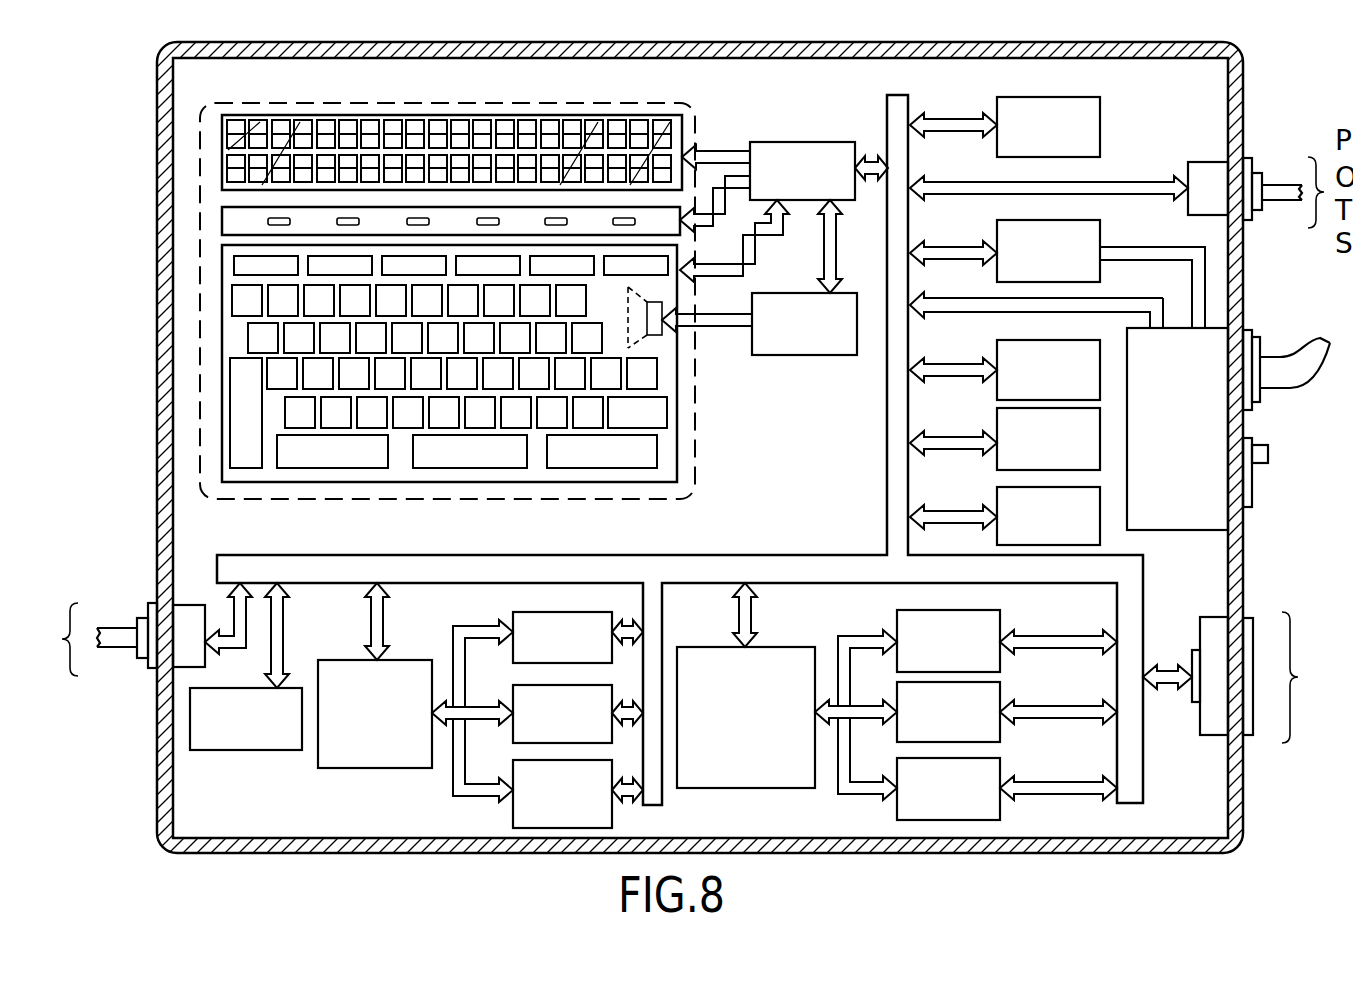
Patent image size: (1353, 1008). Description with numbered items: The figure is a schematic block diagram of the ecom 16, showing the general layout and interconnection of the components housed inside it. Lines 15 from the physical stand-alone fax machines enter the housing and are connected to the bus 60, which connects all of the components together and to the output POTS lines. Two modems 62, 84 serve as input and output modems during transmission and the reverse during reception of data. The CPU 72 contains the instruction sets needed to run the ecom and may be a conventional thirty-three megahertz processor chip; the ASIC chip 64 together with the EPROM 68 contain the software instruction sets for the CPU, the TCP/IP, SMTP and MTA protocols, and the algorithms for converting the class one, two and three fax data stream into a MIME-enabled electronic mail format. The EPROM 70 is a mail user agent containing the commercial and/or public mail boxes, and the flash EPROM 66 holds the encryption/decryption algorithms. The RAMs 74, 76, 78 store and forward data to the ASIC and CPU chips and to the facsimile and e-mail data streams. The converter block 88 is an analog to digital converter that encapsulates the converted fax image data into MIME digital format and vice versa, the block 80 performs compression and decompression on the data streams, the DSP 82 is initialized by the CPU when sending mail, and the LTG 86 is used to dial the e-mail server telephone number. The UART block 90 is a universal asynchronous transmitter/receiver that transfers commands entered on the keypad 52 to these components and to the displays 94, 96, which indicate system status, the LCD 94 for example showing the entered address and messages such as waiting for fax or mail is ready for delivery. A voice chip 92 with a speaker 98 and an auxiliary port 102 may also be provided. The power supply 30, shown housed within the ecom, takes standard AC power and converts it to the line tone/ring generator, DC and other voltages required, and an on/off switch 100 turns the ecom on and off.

The lines 15 is at (120, 637).
The ecom 16 is at (1243, 547).
The power supply 30 is at (1190, 381).
The keypad 52 is at (222, 294).
The bus 60 is at (780, 560).
The modem 62 is at (271, 738).
The ASIC chip 64 is at (385, 758).
The flash EPROM 66 is at (575, 653).
The EPROM 68 is at (575, 729).
The EPROM 70 is at (575, 805).
The CPU 72 is at (766, 778).
The RAM 74 is at (956, 655).
The RAM 76 is at (956, 727).
The RAM 78 is at (956, 800).
The compression/decompression block 80 is at (1062, 532).
The DSP 82 is at (1062, 458).
The modem 84 is at (1062, 377).
The LTG 86 is at (1000, 232).
The converter block 88 is at (1000, 105).
The UART block 90 is at (800, 152).
The voice chip 92 is at (805, 345).
The LCD display 94 is at (297, 114).
The display 96 is at (222, 218).
The speaker 98 is at (662, 347).
The on/off switch 100 is at (1272, 453).
The auxiliary port 102 is at (1248, 715).